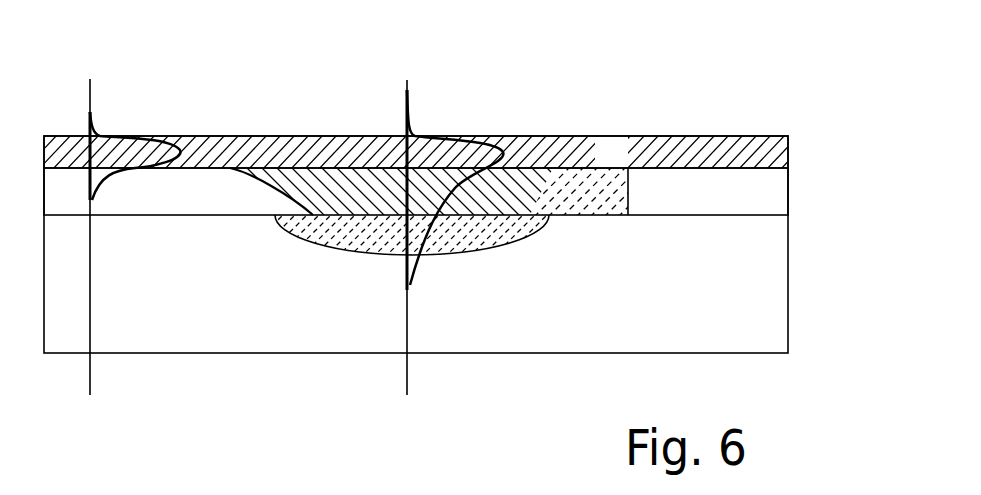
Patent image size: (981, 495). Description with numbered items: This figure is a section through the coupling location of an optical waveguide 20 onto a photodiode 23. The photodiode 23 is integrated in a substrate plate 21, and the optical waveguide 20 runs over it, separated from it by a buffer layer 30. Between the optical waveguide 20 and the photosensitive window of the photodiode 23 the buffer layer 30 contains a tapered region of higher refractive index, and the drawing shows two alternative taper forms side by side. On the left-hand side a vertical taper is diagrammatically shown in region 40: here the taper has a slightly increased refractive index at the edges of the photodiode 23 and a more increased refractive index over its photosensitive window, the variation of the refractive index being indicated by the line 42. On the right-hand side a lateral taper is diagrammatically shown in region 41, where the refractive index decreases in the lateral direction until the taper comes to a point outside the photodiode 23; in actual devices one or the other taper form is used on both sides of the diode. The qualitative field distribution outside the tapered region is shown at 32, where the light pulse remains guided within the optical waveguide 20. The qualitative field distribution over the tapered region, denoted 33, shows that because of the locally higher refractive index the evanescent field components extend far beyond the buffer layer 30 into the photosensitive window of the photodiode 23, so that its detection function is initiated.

The optical waveguide 20 is at (760, 148).
The substrate plate 21 is at (184, 327).
The photodiode 23 is at (462, 275).
The buffer layer 30 is at (773, 198).
The qualitative field distribution outside the region 32 is at (104, 92).
The qualitative field distribution in the region 33 is at (395, 95).
The vertical taper region 40 is at (312, 160).
The lateral taper region 41 is at (558, 168).
The line indicating refractive index variation 42 is at (262, 183).